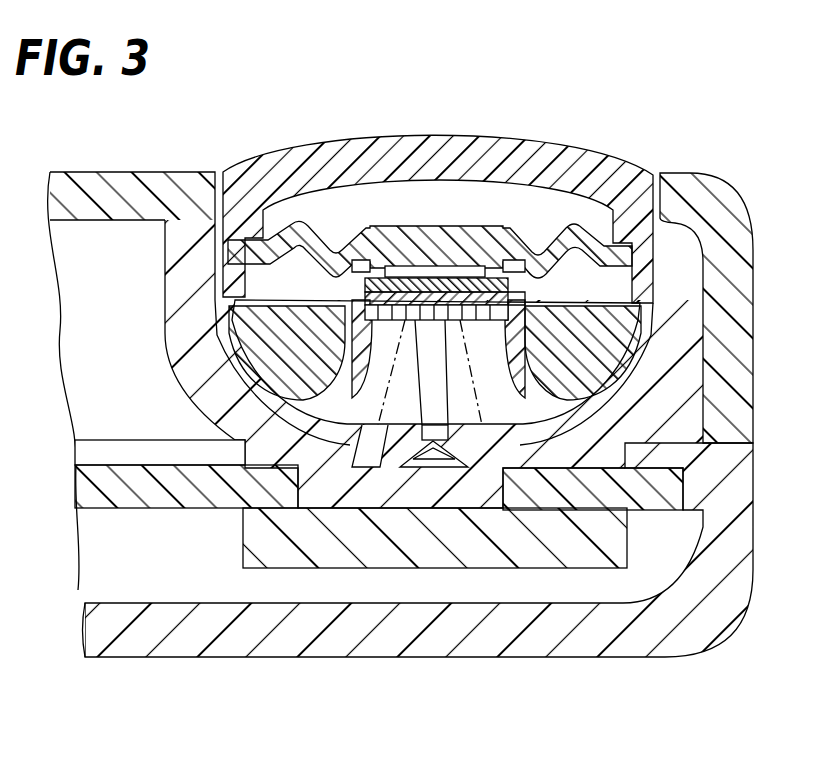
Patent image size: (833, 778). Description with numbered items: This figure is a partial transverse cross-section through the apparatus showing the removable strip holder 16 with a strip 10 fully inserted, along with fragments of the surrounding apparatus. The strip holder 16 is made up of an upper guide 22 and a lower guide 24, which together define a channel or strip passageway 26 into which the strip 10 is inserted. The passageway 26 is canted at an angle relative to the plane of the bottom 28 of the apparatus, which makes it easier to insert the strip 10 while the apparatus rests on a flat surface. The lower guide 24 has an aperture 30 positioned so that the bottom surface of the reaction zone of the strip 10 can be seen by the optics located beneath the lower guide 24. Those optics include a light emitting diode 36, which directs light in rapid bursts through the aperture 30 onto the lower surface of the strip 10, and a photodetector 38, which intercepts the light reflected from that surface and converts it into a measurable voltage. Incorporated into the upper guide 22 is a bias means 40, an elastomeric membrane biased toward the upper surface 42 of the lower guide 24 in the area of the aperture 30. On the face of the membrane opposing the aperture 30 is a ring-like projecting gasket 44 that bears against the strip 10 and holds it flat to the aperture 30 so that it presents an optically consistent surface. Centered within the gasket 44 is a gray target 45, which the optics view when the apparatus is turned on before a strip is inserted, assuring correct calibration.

The strip 10 is at (365, 285).
The removable strip holder 16 is at (272, 146).
The upper guide 22 is at (536, 132).
The lower guide 24 is at (645, 352).
The strip passageway 26 is at (355, 312).
The bottom 28 is at (522, 657).
The aperture 30 is at (470, 333).
The light emitting diode 36 is at (432, 470).
The photodetector 38 is at (368, 446).
The bias means 40 is at (410, 244).
The upper surface 42 is at (500, 260).
The ring-like projecting gasket 44 is at (512, 296).
The gray target 45 is at (440, 270).